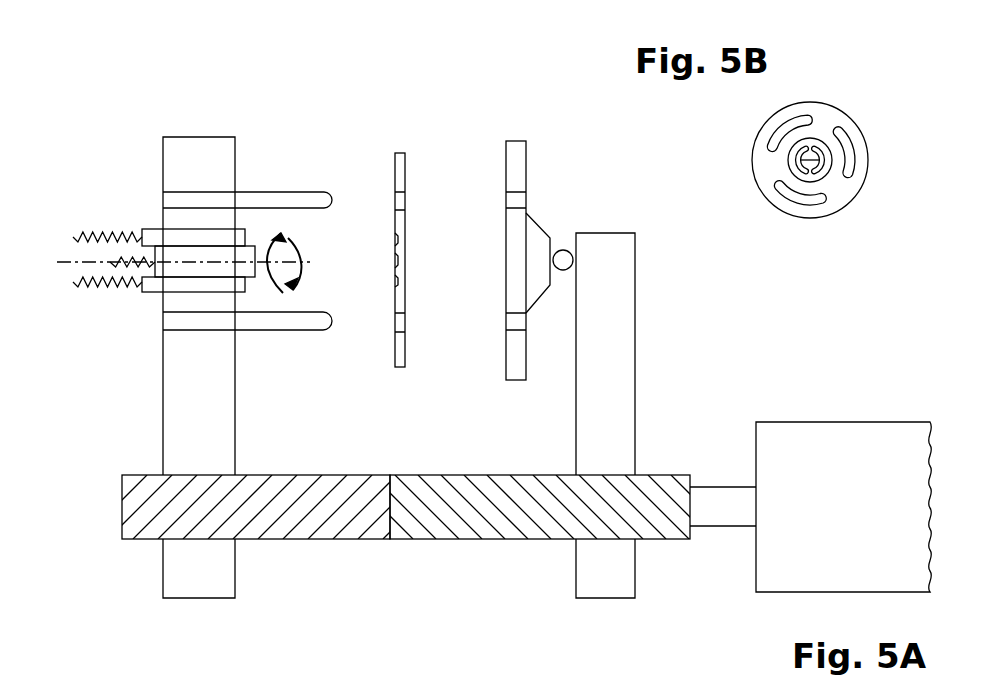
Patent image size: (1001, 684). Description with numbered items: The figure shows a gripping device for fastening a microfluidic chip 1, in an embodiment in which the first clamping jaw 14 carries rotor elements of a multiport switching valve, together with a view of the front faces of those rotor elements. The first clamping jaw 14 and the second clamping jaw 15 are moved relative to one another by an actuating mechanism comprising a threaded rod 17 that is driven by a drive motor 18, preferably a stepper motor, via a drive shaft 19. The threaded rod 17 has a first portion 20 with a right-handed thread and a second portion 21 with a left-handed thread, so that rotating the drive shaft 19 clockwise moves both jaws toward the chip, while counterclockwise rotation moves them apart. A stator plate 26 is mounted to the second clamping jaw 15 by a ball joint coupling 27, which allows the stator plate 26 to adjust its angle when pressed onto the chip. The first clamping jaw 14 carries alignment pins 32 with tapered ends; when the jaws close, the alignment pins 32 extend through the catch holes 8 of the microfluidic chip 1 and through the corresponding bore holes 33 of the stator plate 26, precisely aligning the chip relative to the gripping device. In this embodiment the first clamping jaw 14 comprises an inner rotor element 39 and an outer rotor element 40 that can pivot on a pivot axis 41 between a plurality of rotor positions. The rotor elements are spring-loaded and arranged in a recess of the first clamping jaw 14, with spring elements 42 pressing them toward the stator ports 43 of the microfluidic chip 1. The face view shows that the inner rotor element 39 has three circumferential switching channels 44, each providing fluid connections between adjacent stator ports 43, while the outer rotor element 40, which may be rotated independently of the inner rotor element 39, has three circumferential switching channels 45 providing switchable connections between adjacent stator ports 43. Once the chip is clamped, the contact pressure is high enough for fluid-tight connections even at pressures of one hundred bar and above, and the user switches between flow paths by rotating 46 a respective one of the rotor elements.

In FIG. 5A, the microfluidic chip 1 is at (400, 170).
In FIG. 5A, the catch holes 8 is at (400, 200).
In FIG. 5A, the first clamping jaw 14 is at (235, 437).
In FIG. 5A, the second clamping jaw 15 is at (624, 414).
In FIG. 5A, the threaded rod 17 is at (418, 465).
In FIG. 5A, the drive motor 18 is at (840, 432).
In FIG. 5A, the drive shaft 19 is at (724, 495).
In FIG. 5A, the first portion 20 is at (342, 526).
In FIG. 5A, the second portion 21 is at (444, 527).
In FIG. 5A, the stator plate 26 is at (515, 152).
In FIG. 5A, the ball joint coupling 27 is at (562, 270).
In FIG. 5A, the alignment pins 32 is at (297, 200).
In FIG. 5A, the bore holes 33 is at (520, 200).
In FIG. 5A, the inner rotor element 39 is at (195, 253).
In FIG. 5B, the inner rotor element 39 is at (818, 138).
In FIG. 5A, the outer rotor element 40 is at (150, 237).
In FIG. 5B, the outer rotor element 40 is at (852, 125).
In FIG. 5A, the pivot axis 41 is at (297, 260).
In FIG. 5A, the spring elements 42 is at (81, 233).
In FIG. 5A, the stator ports 43 is at (398, 240).
In FIG. 5B, the switching channels 44 is at (800, 160).
In FIG. 5B, the switching channels 45 is at (773, 140).
In FIG. 5A, the rotating 46 is at (280, 300).